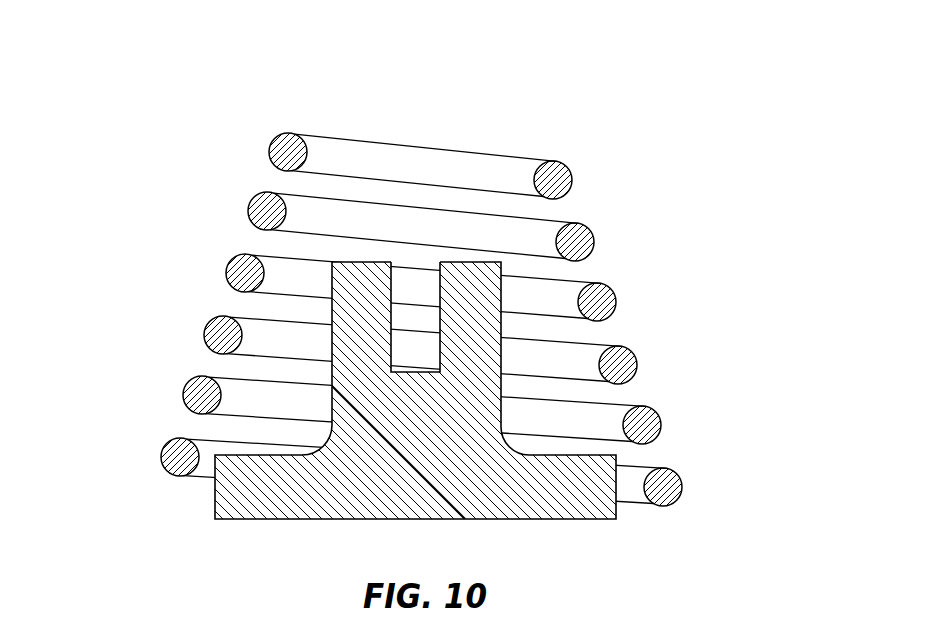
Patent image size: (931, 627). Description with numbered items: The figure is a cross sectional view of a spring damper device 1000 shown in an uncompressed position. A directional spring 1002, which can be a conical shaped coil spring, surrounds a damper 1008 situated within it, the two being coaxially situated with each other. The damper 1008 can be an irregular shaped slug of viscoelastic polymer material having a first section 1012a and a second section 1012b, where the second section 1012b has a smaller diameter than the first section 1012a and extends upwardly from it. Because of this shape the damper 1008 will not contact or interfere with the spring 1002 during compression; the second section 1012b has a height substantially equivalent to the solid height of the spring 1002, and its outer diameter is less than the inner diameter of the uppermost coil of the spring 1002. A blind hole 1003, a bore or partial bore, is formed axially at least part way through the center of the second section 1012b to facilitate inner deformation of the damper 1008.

The spring damper device 1000 is at (190, 93).
The directional spring 1002 is at (250, 208).
The blind hole 1003 is at (417, 310).
The damper 1008 is at (436, 390).
The first section 1012a is at (590, 503).
The second section 1012b is at (487, 395).